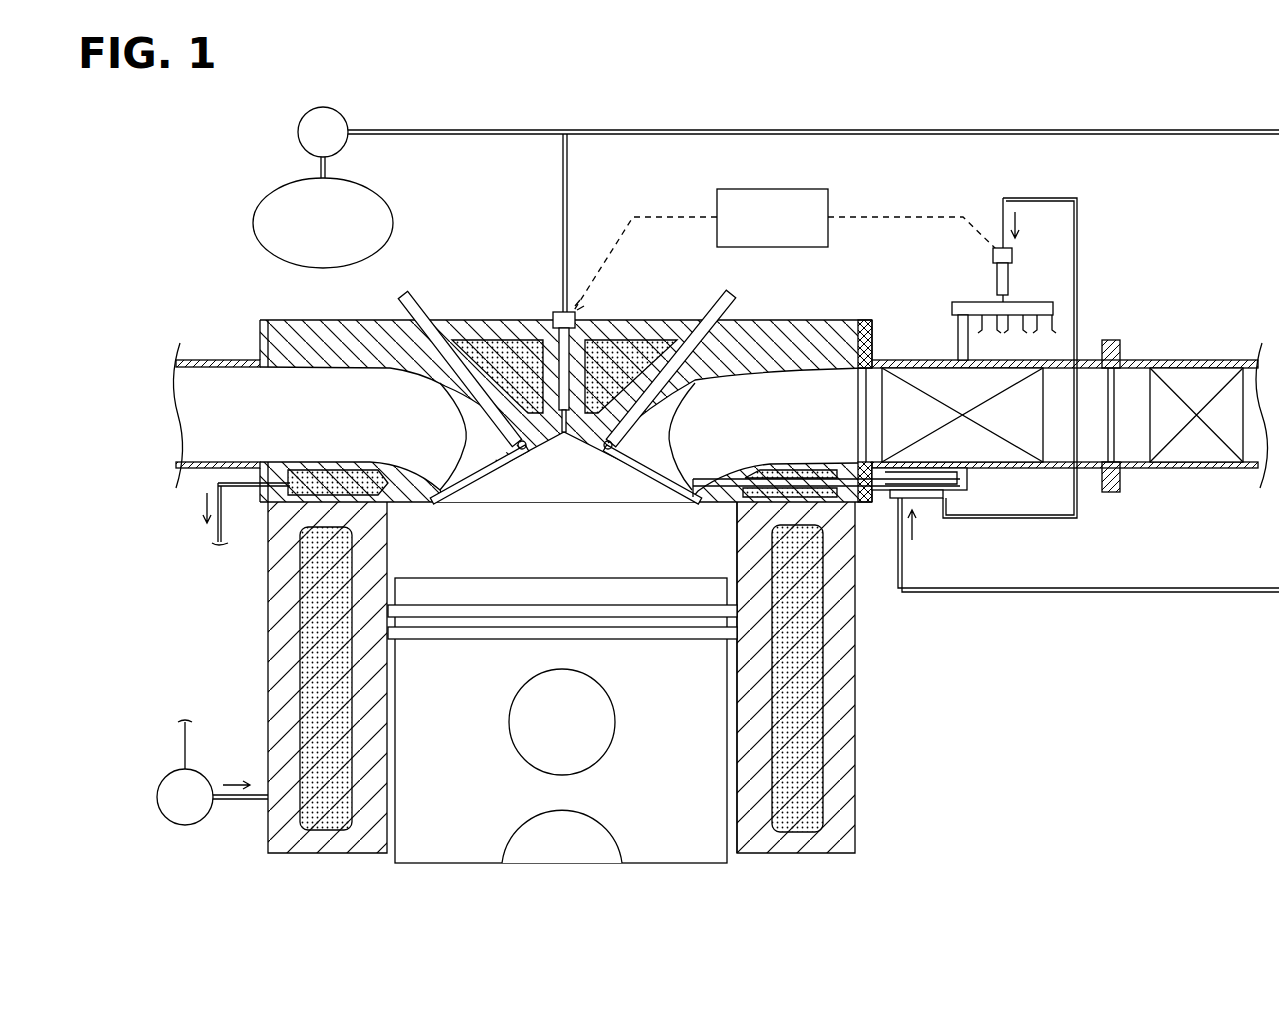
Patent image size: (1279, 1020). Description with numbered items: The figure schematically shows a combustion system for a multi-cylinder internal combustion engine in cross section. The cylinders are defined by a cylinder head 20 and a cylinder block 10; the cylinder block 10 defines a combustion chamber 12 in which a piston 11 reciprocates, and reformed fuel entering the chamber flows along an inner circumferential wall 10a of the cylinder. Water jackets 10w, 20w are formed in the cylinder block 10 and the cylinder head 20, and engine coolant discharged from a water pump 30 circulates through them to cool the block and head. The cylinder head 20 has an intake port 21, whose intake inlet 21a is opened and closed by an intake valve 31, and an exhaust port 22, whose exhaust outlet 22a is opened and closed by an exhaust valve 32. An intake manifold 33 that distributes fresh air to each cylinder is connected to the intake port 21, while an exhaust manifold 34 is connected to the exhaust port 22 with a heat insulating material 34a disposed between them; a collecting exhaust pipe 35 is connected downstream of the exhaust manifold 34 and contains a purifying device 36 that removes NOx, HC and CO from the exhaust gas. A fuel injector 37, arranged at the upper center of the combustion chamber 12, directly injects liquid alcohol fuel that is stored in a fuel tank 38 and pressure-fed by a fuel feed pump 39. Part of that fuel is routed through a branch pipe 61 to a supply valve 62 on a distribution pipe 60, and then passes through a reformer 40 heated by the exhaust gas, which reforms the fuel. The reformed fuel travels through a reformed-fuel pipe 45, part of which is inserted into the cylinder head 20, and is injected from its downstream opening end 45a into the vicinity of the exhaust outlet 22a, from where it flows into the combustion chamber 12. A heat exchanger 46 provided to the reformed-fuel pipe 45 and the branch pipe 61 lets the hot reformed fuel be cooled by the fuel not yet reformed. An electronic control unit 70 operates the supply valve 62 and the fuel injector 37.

The cylinder block 10 is at (266, 630).
The inner circumferential wall 10a is at (737, 514).
The water jacket 10w is at (315, 665).
The piston 11 is at (472, 580).
The combustion chamber 12 is at (578, 551).
The cylinder head 20 is at (470, 330).
The water jacket 20w is at (507, 345).
The intake port 21 is at (332, 326).
The intake inlet 21a is at (522, 450).
The exhaust port 22 is at (804, 330).
The exhaust outlet 22a is at (610, 450).
The water pump 30 is at (202, 823).
The intake valve 31 is at (418, 290).
The exhaust valve 32 is at (722, 298).
The intake manifold 33 is at (232, 360).
The exhaust manifold 34 is at (902, 360).
The heat insulating material 34a is at (866, 320).
The collecting exhaust pipe 35 is at (1160, 360).
The purifying device 36 is at (1198, 376).
The fuel injector 37 is at (576, 440).
The fuel tank 38 is at (278, 185).
The fuel feed pump 39 is at (304, 116).
The reformer 40 is at (944, 372).
The reformed-fuel pipe 45 is at (968, 487).
The downstream opening end 45a is at (703, 476).
The heat exchanger 46 is at (925, 505).
The distribution pipe 60 is at (1034, 302).
The branch pipe 61 is at (630, 135).
The supply valve 62 is at (994, 280).
The electronic control unit 70 is at (806, 188).